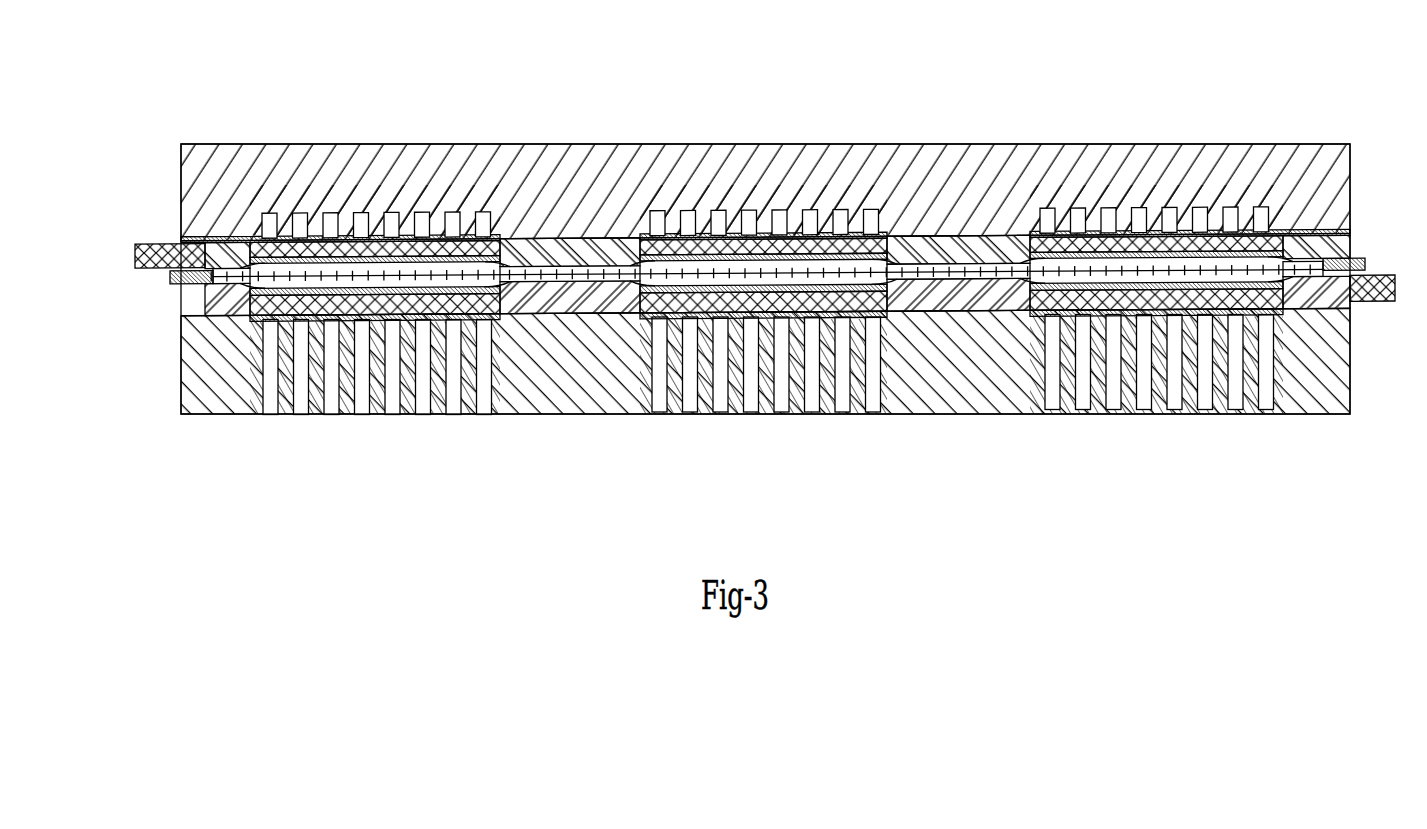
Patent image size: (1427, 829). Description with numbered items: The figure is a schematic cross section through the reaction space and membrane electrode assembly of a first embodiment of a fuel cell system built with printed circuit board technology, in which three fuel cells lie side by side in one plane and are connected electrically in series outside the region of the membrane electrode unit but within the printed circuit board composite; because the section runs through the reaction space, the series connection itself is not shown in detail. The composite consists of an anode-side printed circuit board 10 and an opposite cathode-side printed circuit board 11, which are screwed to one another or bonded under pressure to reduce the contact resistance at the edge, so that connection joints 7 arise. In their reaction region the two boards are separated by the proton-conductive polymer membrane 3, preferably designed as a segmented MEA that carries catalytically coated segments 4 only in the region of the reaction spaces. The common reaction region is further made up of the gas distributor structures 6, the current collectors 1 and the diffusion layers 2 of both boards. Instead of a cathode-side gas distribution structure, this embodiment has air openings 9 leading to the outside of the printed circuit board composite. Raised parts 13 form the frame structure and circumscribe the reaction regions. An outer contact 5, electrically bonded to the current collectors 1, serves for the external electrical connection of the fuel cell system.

The current collector 1 is at (241, 236).
The diffusion layer 2 is at (820, 250).
The membrane electrode assembly (MEA) 3 is at (610, 265).
The catalytically coated segment 4 is at (646, 258).
The outer contact 5 is at (1377, 312).
The gas distributor structure 6 is at (748, 228).
The connection joint 7 is at (1358, 266).
The air opening 9 is at (748, 368).
The anode-side printed circuit board 10 is at (238, 164).
The cathode-side printed circuit board 11 is at (232, 373).
The raised part 13 is at (975, 262).